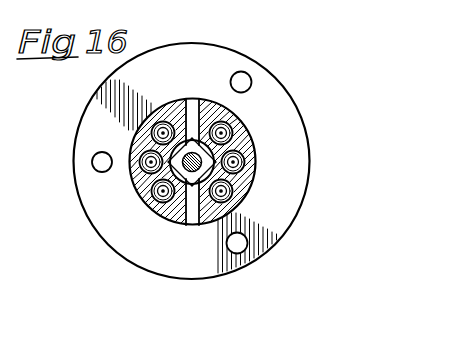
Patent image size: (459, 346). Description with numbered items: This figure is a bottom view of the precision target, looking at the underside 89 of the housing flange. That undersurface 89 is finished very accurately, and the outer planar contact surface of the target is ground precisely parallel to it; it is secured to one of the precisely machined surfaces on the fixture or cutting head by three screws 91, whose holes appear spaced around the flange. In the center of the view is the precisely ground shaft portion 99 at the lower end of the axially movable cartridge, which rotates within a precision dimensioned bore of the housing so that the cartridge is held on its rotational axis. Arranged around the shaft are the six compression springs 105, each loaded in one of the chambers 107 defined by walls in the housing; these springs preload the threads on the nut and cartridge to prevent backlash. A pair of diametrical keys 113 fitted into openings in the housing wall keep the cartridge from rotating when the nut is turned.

The underside of the flange 89 is at (123, 242).
The screws 91 is at (250, 75).
The shaft portion 99 is at (236, 144).
The springs 105 is at (240, 171).
The chambers 107 is at (157, 195).
The diametrical keys 113 is at (195, 104).